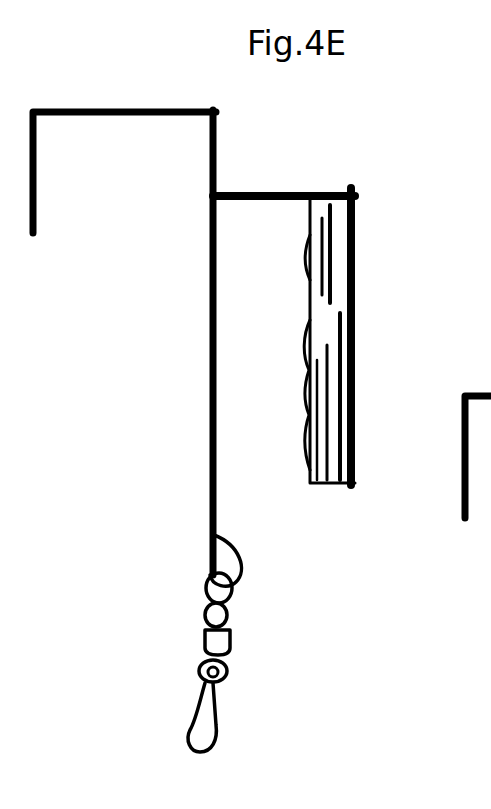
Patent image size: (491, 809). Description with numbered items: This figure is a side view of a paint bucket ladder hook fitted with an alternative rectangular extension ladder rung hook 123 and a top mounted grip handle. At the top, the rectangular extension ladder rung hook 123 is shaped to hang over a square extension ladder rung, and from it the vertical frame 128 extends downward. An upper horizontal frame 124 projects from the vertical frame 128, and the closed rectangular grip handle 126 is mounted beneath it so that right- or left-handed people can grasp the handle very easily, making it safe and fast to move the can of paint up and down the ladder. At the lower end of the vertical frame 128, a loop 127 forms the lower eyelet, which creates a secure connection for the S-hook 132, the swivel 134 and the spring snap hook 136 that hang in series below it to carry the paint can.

The rectangular extension ladder rung hook 123 is at (38, 110).
The upper horizontal frame 124 is at (275, 193).
The closed rectangular grip handle 126 is at (355, 273).
The rope end loop 127 is at (243, 557).
The vertical frame 128 is at (213, 383).
The S-hook 132 is at (231, 598).
The swivel 134 is at (234, 640).
The spring snap hook 136 is at (213, 702).